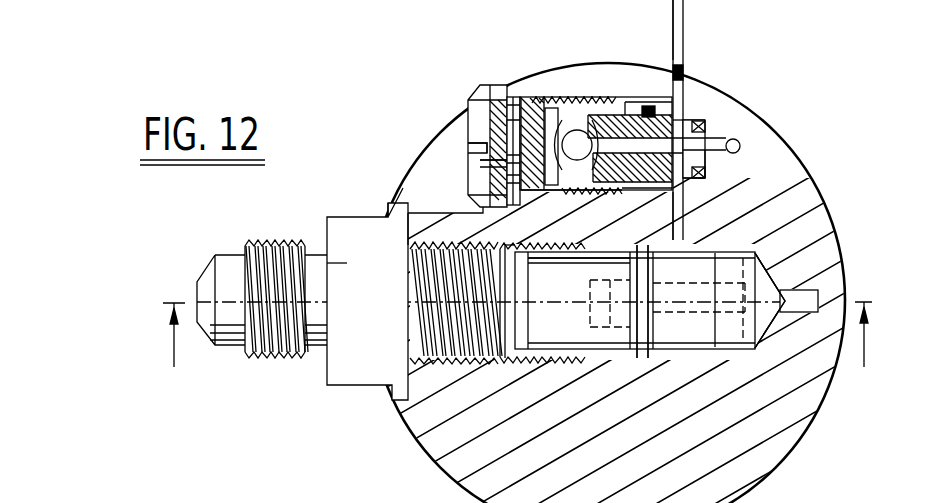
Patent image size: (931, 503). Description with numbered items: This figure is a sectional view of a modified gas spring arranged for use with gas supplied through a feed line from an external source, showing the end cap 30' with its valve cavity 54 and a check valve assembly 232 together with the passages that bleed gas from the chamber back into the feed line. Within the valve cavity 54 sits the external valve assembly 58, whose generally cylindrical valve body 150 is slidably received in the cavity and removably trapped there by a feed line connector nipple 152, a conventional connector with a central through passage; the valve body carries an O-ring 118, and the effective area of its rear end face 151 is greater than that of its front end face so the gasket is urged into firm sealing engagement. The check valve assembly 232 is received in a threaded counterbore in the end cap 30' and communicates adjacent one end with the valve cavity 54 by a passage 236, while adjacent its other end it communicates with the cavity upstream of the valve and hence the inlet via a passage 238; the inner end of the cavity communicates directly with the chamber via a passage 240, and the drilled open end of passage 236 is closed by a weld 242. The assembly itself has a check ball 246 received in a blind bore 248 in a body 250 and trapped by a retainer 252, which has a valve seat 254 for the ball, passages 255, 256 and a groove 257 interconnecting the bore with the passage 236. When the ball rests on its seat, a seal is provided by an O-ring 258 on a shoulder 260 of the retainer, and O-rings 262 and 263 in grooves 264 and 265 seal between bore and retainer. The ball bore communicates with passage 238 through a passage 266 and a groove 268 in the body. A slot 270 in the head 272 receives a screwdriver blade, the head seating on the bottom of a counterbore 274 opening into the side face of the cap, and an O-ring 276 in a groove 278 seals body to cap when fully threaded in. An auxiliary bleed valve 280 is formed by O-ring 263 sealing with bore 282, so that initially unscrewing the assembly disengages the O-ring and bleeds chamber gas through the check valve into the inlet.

The end cap 30' is at (619, 283).
The valve cavity 54 is at (468, 352).
The external valve assembly 58 is at (612, 362).
The O-ring 118 is at (724, 331).
The valve body 150 is at (622, 360).
The rear end face 151 is at (490, 364).
The feed line connector nipple 152 is at (328, 217).
The check valve assembly 232 is at (434, 65).
The passage 236 is at (690, 217).
The passage 238 is at (448, 250).
The passage 240 is at (741, 146).
The weld 242 is at (685, 40).
The check ball 246 is at (580, 104).
The blind bore 248 is at (563, 103).
The body 250 is at (596, 105).
The retainer 252 is at (724, 168).
The valve seat 254 is at (567, 190).
The passage 255 is at (668, 252).
The passage 256 is at (693, 118).
The groove 257 is at (696, 118).
The O-ring 258 is at (579, 268).
The shoulder 260 is at (593, 118).
The O-ring 262 is at (592, 105).
The O-ring 263 is at (700, 178).
The groove 264 is at (678, 90).
The groove 265 is at (712, 105).
The passage 266 is at (527, 102).
The groove 268 is at (545, 247).
The slot 270 is at (468, 143).
The head 272 is at (480, 160).
The counterbore 274 is at (408, 181).
The O-ring 276 is at (445, 245).
The groove 278 is at (513, 135).
The auxiliary bleed valve 280 is at (712, 100).
The bore 282 is at (716, 125).